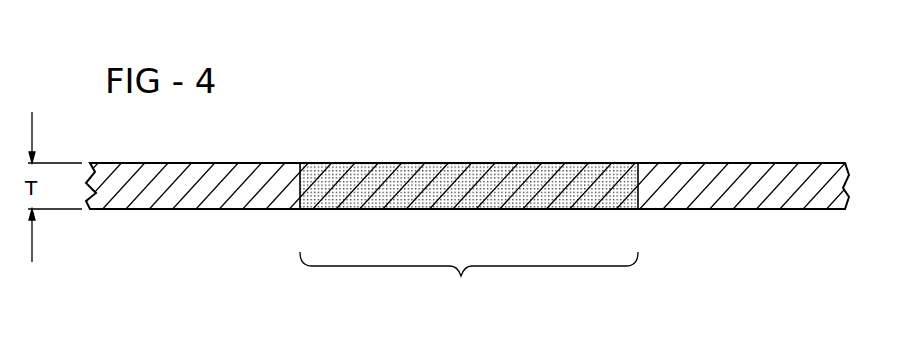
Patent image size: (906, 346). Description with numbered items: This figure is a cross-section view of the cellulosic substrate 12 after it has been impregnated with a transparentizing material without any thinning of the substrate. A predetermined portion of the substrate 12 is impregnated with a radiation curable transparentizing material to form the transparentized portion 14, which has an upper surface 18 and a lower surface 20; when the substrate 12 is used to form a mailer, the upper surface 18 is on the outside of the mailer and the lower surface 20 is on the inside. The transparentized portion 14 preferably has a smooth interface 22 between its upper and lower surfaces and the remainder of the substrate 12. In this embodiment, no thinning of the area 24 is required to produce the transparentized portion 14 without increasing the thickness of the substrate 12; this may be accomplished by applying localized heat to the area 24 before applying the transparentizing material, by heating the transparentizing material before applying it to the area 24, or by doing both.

The substrate 12 is at (632, 108).
The transparentized portion 14 is at (508, 163).
The upper surface 18 is at (404, 163).
The lower surface 20 is at (388, 209).
The smooth interface 22 is at (274, 163).
The area 24 is at (469, 283).